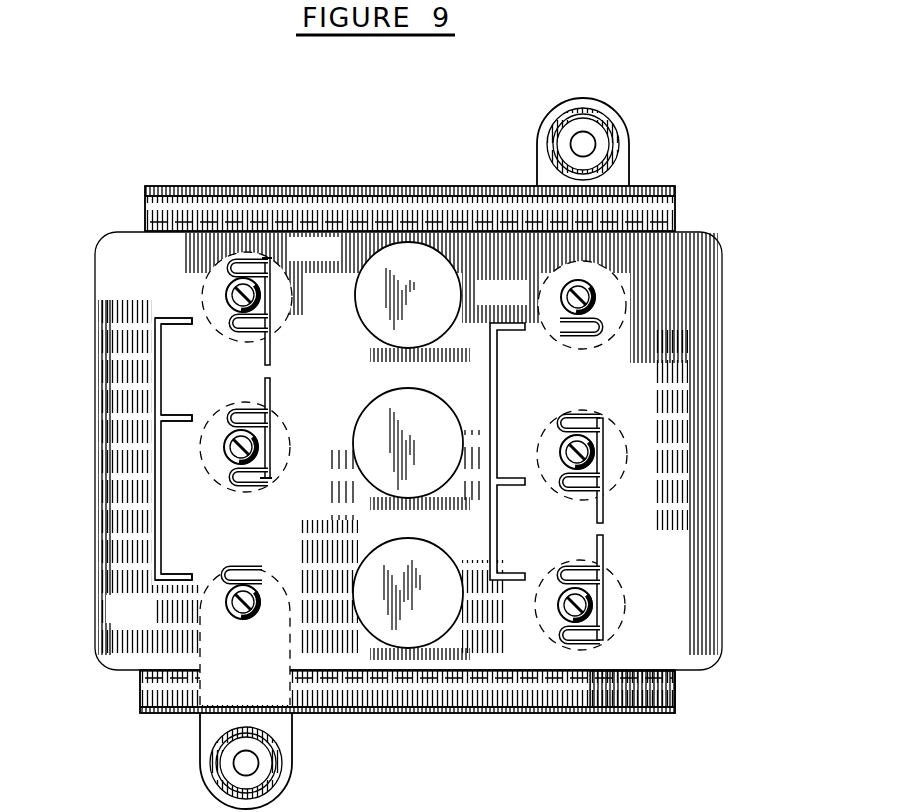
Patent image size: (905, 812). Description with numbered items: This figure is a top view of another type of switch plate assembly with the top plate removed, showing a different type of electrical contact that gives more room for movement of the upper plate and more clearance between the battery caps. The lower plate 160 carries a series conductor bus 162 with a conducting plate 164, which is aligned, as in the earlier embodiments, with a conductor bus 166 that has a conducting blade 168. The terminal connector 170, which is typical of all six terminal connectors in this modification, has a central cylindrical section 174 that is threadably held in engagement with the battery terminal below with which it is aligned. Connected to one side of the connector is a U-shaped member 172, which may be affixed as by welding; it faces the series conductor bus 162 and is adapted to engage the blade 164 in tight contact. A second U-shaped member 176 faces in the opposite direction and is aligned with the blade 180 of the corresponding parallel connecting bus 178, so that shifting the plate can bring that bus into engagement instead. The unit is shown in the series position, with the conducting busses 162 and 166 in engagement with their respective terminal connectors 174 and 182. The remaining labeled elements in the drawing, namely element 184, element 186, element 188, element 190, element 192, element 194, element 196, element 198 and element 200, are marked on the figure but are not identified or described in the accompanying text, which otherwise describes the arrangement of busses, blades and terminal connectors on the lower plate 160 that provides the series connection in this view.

The lower plate 160 is at (125, 240).
The series conductor bus 162 is at (272, 302).
The conducting plate 164 is at (297, 251).
The conductor bus 166 is at (255, 450).
The conducting blade 168 is at (262, 494).
The terminal connector 170 is at (245, 253).
The U-shaped member 172 is at (236, 266).
The central cylindrical section 174 is at (236, 290).
The U-shaped member 176 is at (236, 322).
The parallel connecting bus 178 is at (153, 334).
The blade 180 is at (190, 412).
The terminal connector 182 is at (230, 453).
The upper spring clip 184 is at (240, 412).
The lower spring clip 186 is at (246, 486).
The screw terminal 188 is at (255, 568).
The apertures 190 is at (446, 345).
The contact strip 192 is at (602, 443).
The spring clip 194 is at (562, 416).
The spring clip 196 is at (610, 593).
The spring clip 198 is at (605, 632).
The right bracket 200 is at (490, 328).